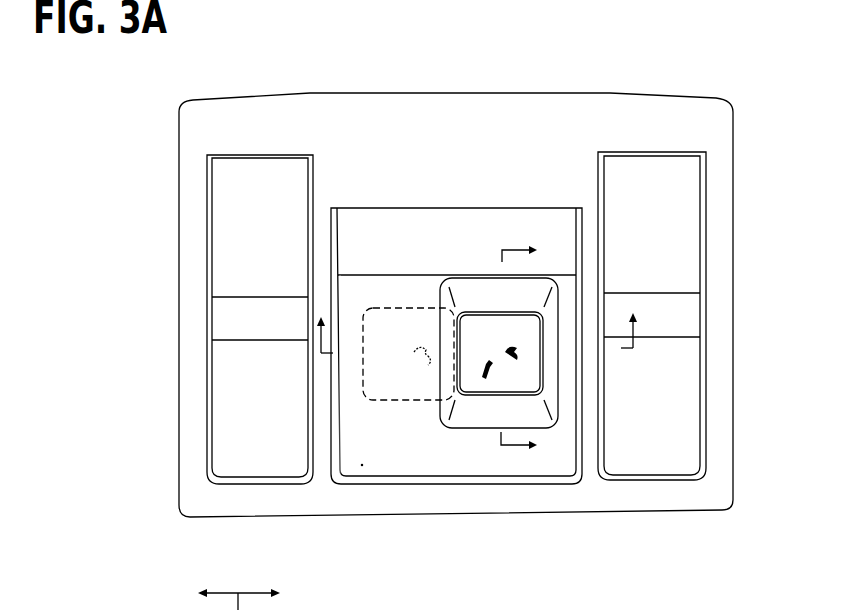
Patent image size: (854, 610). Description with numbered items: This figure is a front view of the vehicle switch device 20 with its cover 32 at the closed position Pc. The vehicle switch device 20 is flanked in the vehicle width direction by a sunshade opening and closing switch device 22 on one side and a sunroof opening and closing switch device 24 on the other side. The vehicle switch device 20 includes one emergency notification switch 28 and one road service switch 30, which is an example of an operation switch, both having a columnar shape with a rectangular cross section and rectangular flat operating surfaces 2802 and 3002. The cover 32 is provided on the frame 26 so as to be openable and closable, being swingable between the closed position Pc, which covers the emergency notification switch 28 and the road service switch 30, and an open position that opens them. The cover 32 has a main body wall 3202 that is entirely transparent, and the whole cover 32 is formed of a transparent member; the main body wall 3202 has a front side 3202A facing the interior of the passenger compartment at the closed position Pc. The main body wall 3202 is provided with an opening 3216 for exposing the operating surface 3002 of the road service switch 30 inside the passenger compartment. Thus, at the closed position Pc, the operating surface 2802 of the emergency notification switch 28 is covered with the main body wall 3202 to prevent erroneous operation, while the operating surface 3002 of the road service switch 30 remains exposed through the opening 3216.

The vehicle switch device 20 is at (542, 498).
The sunshade opening and closing switch device 22 is at (256, 306).
The sunroof opening and closing switch device 24 is at (680, 300).
The frame 26 is at (572, 92).
The emergency notification switch 28 is at (383, 380).
The operating surface 2802 is at (456, 392).
The road service switch 30 is at (530, 373).
The operating surface 3002 is at (606, 444).
The cover 32 is at (386, 297).
The main body wall 3202 is at (413, 442).
The front side 3202A is at (445, 440).
The opening 3216 is at (509, 316).
The closed position Pc is at (362, 465).